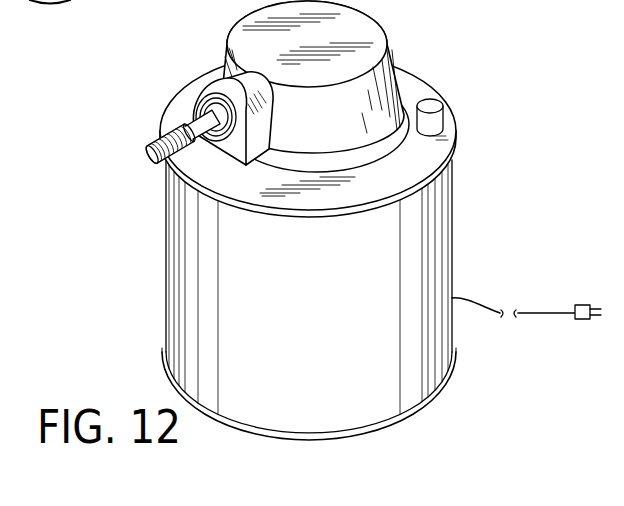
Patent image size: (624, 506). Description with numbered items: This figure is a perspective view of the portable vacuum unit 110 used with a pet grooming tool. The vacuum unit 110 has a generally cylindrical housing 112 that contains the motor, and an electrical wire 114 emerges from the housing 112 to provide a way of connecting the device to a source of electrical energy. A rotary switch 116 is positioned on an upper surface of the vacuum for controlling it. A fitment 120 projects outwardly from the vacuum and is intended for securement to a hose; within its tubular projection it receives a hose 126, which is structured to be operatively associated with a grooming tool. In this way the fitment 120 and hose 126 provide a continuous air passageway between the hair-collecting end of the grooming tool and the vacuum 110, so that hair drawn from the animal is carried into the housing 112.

The portable vacuum unit 110 is at (336, 220).
The generally cylindrical housing 112 is at (433, 270).
The electrical wire 114 is at (577, 320).
The rotary switch 116 is at (440, 118).
The fitment 120 is at (196, 108).
The hose 126 is at (152, 142).